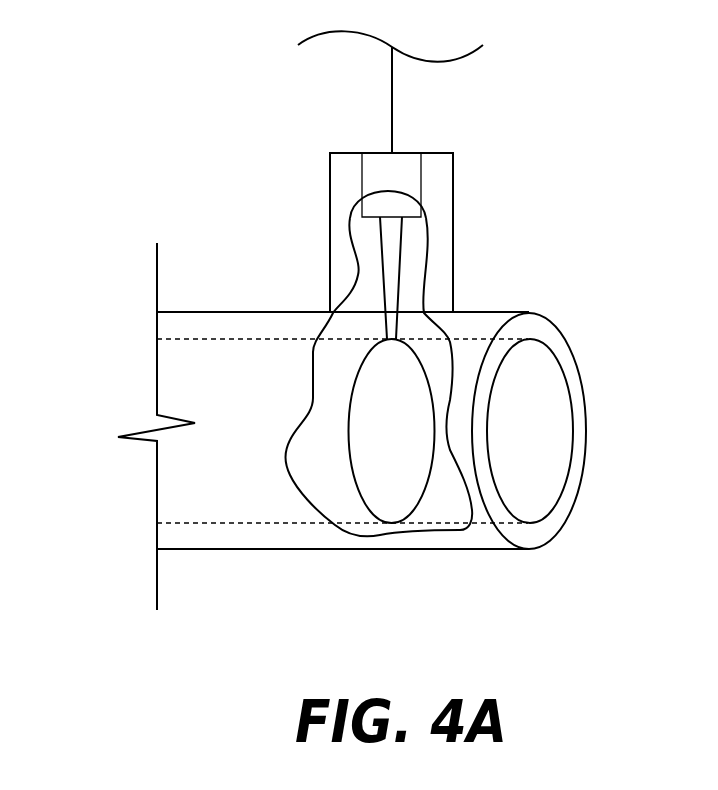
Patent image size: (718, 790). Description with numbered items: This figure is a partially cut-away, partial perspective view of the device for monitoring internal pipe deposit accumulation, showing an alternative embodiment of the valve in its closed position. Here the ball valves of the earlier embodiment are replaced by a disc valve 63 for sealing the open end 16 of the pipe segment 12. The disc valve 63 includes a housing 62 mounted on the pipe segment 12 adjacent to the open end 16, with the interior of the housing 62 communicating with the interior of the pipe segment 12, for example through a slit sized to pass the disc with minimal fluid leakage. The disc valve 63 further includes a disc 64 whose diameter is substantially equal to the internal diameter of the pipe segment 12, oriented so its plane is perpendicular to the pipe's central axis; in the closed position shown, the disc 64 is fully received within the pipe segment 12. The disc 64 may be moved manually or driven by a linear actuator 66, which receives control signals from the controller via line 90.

The pipe segment 12 is at (248, 549).
The open end 16 is at (606, 407).
The housing 62 is at (453, 207).
The disc valve 63 is at (315, 289).
The disc 64 is at (392, 505).
The linear actuator 66 is at (372, 180).
The line 90 is at (392, 110).